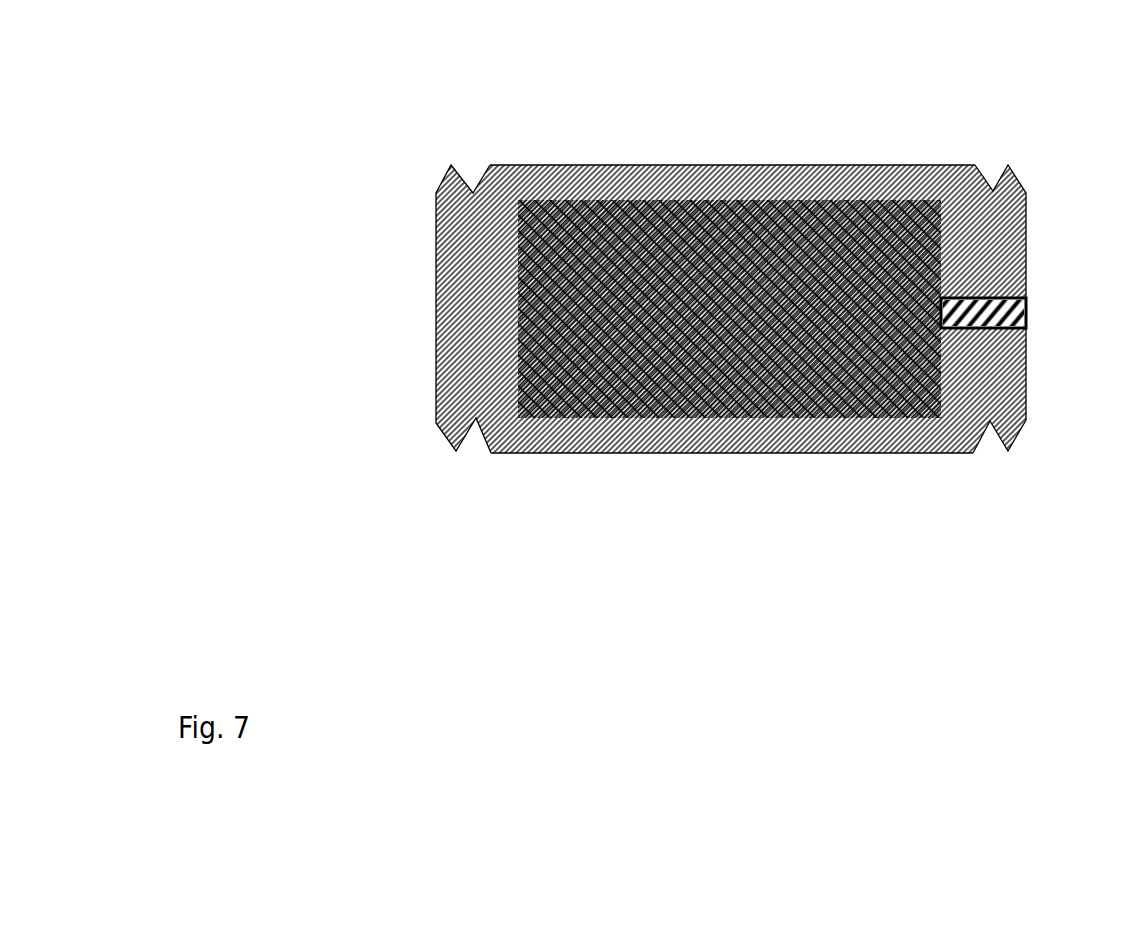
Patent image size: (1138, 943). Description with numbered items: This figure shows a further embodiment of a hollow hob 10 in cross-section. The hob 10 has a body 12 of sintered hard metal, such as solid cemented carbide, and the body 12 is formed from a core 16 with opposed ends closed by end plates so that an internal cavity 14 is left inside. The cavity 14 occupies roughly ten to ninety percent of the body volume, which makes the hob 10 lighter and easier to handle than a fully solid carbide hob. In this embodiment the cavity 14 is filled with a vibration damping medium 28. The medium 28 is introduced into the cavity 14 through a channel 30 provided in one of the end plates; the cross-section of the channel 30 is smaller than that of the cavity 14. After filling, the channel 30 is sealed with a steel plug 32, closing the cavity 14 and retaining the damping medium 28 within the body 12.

The hob 10 is at (904, 499).
The body 12 is at (593, 175).
The cavity 14 is at (793, 182).
The core 16 is at (615, 430).
The vibration damping medium 28 is at (729, 309).
The channel 30 is at (980, 320).
The steel plug 32 is at (1018, 298).